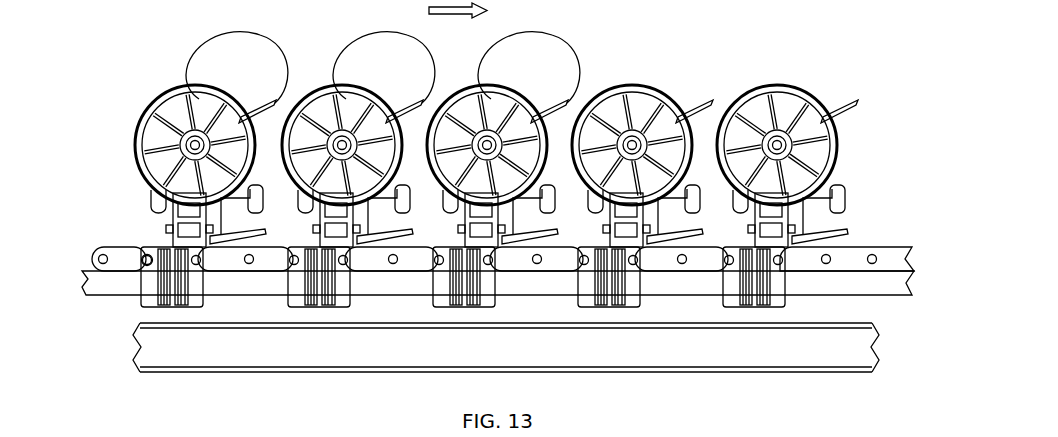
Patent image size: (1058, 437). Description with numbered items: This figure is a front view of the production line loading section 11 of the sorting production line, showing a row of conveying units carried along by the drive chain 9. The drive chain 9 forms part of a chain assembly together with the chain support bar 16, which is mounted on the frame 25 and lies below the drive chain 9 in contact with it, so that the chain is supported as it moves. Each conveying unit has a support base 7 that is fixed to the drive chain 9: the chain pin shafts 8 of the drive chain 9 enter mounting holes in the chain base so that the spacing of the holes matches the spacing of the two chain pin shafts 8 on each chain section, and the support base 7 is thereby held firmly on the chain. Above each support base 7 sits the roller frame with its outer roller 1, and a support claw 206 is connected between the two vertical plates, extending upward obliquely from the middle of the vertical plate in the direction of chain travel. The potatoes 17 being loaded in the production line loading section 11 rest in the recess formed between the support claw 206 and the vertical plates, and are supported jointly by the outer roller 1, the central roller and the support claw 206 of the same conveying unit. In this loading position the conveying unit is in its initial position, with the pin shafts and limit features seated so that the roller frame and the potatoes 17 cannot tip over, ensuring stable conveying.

The outer roller 1 is at (168, 120).
The support base 7 is at (777, 291).
The chain pin shaft 8 is at (150, 257).
The drive chain 9 is at (126, 262).
The production line loading section 11 is at (838, 55).
The chain support bar 16 is at (127, 292).
The fruits and vegetables (potatoes) 17 is at (233, 53).
The frame 25 is at (432, 352).
The support claw 206 is at (694, 104).